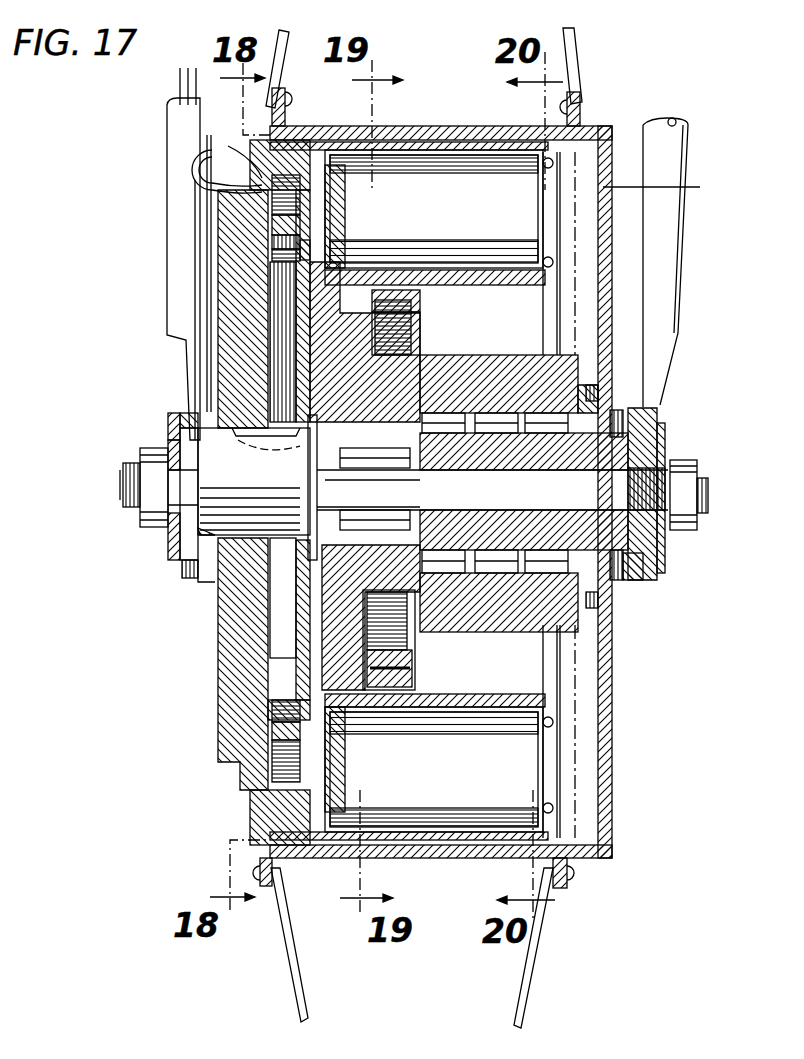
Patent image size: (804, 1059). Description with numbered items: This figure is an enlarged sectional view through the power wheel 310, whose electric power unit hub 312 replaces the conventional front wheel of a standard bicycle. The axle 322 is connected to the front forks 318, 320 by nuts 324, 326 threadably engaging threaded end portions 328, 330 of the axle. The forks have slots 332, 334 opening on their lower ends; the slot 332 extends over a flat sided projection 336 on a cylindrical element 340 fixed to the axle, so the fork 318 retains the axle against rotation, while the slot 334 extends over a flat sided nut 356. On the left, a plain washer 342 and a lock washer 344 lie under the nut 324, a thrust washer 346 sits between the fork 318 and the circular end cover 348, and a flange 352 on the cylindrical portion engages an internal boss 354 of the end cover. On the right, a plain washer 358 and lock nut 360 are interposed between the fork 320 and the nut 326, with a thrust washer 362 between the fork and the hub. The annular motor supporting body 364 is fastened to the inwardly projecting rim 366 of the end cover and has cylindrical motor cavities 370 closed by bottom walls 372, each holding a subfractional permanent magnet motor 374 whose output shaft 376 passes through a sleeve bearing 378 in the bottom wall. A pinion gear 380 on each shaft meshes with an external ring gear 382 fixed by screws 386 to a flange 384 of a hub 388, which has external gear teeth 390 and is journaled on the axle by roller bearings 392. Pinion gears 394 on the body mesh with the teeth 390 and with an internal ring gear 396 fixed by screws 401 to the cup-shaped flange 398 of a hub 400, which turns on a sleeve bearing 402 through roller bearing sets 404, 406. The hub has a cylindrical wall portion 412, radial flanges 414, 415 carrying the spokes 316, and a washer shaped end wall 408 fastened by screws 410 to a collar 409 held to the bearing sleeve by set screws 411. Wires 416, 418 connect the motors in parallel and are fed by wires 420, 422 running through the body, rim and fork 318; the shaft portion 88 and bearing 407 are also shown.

The shaft portion 88 is at (420, 448).
The power wheel 310 is at (640, 126).
The power unit hub 312 is at (626, 256).
The radial spokes 316 is at (581, 72).
The fork 318 is at (176, 294).
The fork 320 is at (668, 285).
The axle 322 is at (492, 490).
The nut 324 is at (145, 458).
The nut 326 is at (688, 470).
The threaded end portion 328 is at (135, 508).
The threaded end portion 330 is at (710, 505).
The slot 332 is at (186, 578).
The slot 334 is at (648, 572).
The flat sided projection 336 is at (192, 480).
The cylindrical element 340 is at (175, 526).
The plain washer 342 is at (176, 412).
The lock washer 344 is at (170, 442).
The thrust washer 346 is at (205, 582).
The end cover 348 is at (215, 696).
The flange 352 is at (306, 470).
The internal boss 354 is at (284, 598).
The flat sided nut 356 is at (662, 535).
The plain washer 358 is at (662, 430).
The lock nut 360 is at (668, 457).
The thrust washer 362 is at (640, 582).
The motor supporting body 364 is at (398, 144).
The rim 366 is at (298, 142).
The motor cavities 370 is at (420, 167).
The bottom wall 372 is at (332, 240).
The permanent magnet motor 374 is at (435, 491).
The output shaft 376 is at (320, 208).
The sleeve bearing 378 is at (292, 210).
The pinion gear 380 is at (290, 200).
The external ring gear 382 is at (278, 700).
The flange 384 is at (295, 672).
The screws 386 is at (312, 232).
The hub 388 is at (287, 342).
The external gear teeth 390 is at (420, 606).
The roller bearings 392 is at (362, 470).
The pinion gears 394 is at (318, 398).
The internal ring gear 396 is at (410, 340).
The cup-shaped flange 398 is at (396, 690).
The hub 400 is at (514, 356).
The screws 401 is at (412, 668).
The sleeve bearing 402 is at (420, 316).
The roller bearings 404 is at (455, 412).
The roller bearings 406 is at (542, 412).
The roller bearing 407 is at (497, 412).
The end wall 408 is at (674, 171).
The collar 409 is at (580, 525).
The screws 410 is at (600, 388).
The set screws 411 is at (620, 408).
The cylindrical wall portion 412 is at (448, 128).
The radial flange 414 is at (286, 100).
The radial flange 415 is at (578, 118).
The wires 416 is at (560, 800).
The wires 418 is at (547, 700).
The wires 420 is at (210, 160).
The wires 422 is at (205, 184).